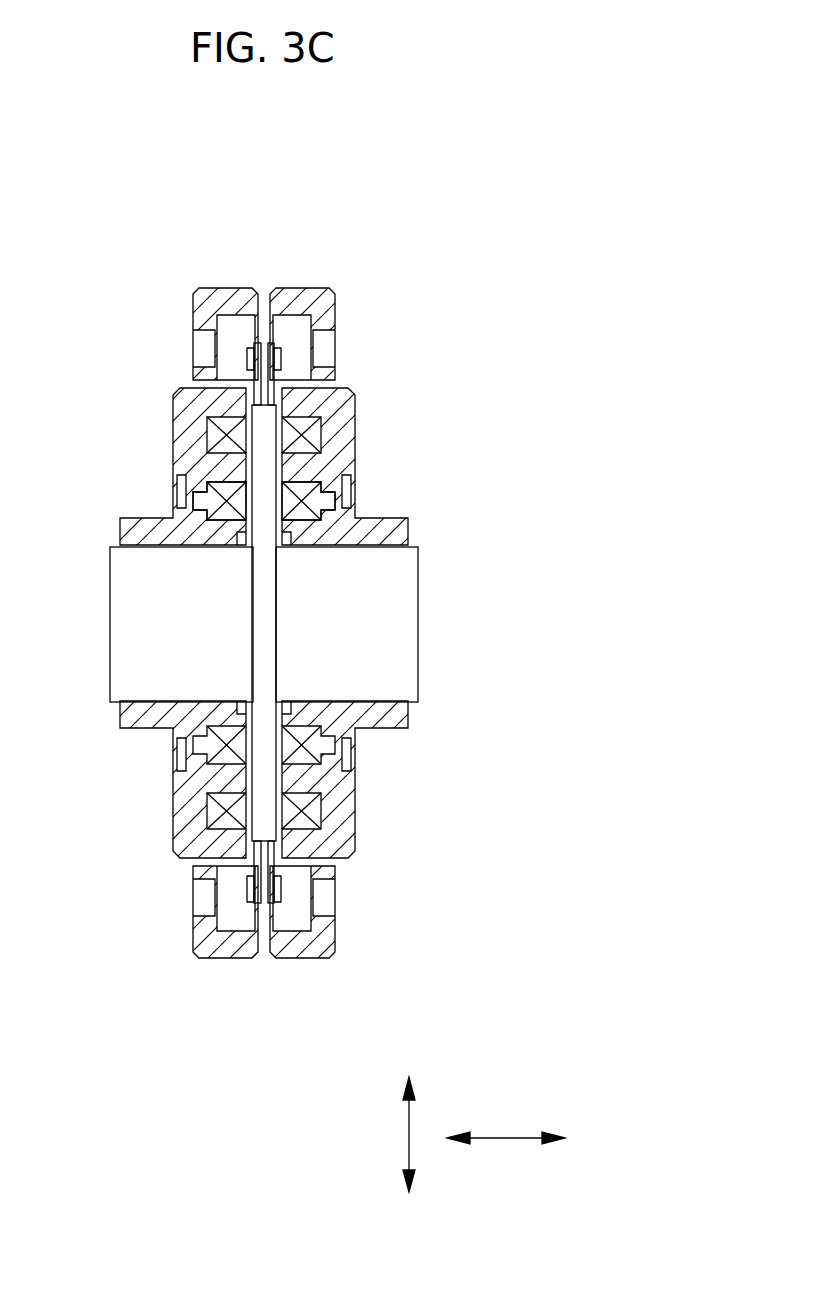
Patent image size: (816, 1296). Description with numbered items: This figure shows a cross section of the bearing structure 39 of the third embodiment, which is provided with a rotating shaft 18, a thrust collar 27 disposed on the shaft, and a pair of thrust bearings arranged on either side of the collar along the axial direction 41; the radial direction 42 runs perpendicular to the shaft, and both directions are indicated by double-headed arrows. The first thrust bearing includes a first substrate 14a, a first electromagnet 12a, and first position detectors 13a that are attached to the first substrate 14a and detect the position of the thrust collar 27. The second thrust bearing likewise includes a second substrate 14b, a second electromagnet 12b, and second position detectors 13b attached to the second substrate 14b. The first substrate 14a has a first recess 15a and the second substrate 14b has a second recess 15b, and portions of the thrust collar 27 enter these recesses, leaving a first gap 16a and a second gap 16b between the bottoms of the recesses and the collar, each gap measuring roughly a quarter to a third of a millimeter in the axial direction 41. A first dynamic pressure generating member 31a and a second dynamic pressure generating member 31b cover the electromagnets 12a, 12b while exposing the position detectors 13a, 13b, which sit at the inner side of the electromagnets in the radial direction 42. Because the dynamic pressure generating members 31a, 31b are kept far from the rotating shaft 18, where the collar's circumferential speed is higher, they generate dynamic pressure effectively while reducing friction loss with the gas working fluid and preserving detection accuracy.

The first electromagnet 12a is at (235, 430).
The second electromagnet 12b is at (300, 430).
The first position detector 13a is at (220, 507).
The second position detector 13b is at (315, 505).
The first substrate 14a is at (219, 300).
The second substrate 14b is at (305, 300).
The first recess 15a is at (262, 873).
The second recess 15b is at (266, 873).
The first gap 16a is at (230, 852).
The second gap 16b is at (298, 852).
The rotating shaft 18 is at (158, 665).
The thrust collar 27 is at (267, 587).
The first dynamic pressure generating member 31a is at (245, 391).
The second dynamic pressure generating member 31b is at (283, 391).
The bearing structure 39 is at (415, 228).
The axial direction 41 is at (505, 1138).
The radial direction 42 is at (409, 1135).